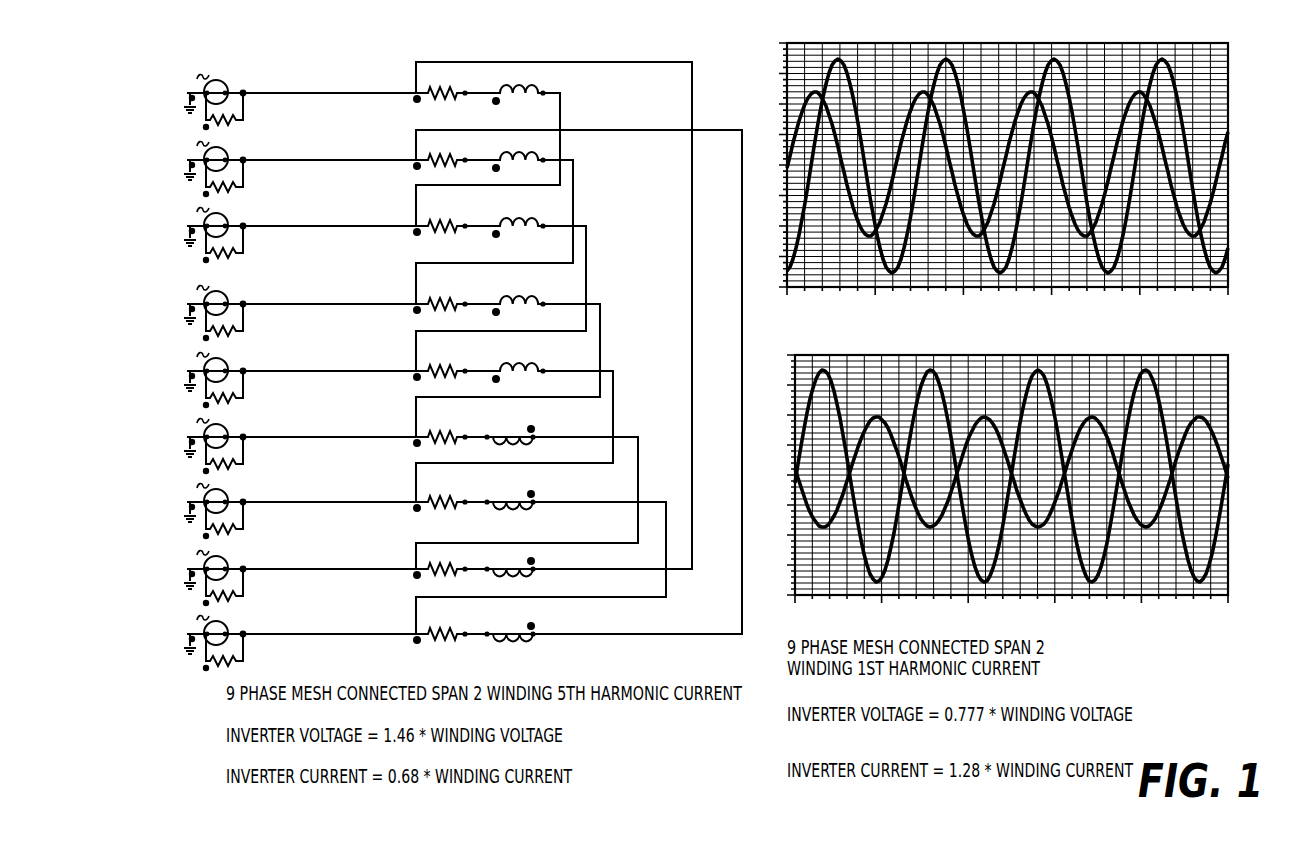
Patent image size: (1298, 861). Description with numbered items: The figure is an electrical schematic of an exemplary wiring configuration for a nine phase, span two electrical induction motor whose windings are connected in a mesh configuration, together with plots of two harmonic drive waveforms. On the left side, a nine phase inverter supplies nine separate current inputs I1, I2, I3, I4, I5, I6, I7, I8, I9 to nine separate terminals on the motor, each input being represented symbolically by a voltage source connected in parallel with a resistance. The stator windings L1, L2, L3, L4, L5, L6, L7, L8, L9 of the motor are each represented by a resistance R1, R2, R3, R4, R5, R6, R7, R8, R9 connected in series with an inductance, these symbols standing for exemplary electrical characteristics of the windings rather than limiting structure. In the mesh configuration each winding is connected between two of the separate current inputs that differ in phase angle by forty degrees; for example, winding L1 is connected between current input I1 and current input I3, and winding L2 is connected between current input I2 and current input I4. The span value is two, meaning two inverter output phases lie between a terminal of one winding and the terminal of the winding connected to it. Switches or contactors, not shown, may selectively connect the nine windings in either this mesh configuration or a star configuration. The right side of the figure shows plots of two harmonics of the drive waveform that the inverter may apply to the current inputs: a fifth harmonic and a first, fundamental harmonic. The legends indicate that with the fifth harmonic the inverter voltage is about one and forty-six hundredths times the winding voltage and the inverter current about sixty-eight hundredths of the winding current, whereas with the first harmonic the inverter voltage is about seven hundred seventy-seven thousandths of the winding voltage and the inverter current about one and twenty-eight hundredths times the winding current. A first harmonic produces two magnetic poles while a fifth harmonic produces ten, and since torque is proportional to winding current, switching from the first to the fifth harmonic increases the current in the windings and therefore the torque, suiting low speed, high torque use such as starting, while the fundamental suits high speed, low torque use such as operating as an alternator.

The current input I1 is at (300, 100).
The current input I2 is at (300, 167).
The current input I3 is at (300, 233).
The current input I4 is at (300, 311).
The current input I5 is at (300, 378).
The current input I6 is at (300, 444).
The current input I7 is at (300, 509).
The current input I8 is at (300, 576).
The current input I9 is at (300, 641).
The resistance R1 is at (453, 84).
The resistance R2 is at (453, 151).
The resistance R3 is at (453, 217).
The resistance R4 is at (453, 295).
The resistance R5 is at (453, 362).
The resistance R6 is at (453, 427).
The resistance R7 is at (453, 492).
The resistance R8 is at (453, 559).
The resistance R9 is at (453, 624).
The winding L1 is at (530, 85).
The winding L2 is at (530, 152).
The winding L3 is at (530, 218).
The winding L4 is at (530, 296).
The winding L5 is at (530, 363).
The winding L6 is at (525, 425).
The winding L7 is at (525, 490).
The winding L8 is at (525, 557).
The winding L9 is at (525, 622).